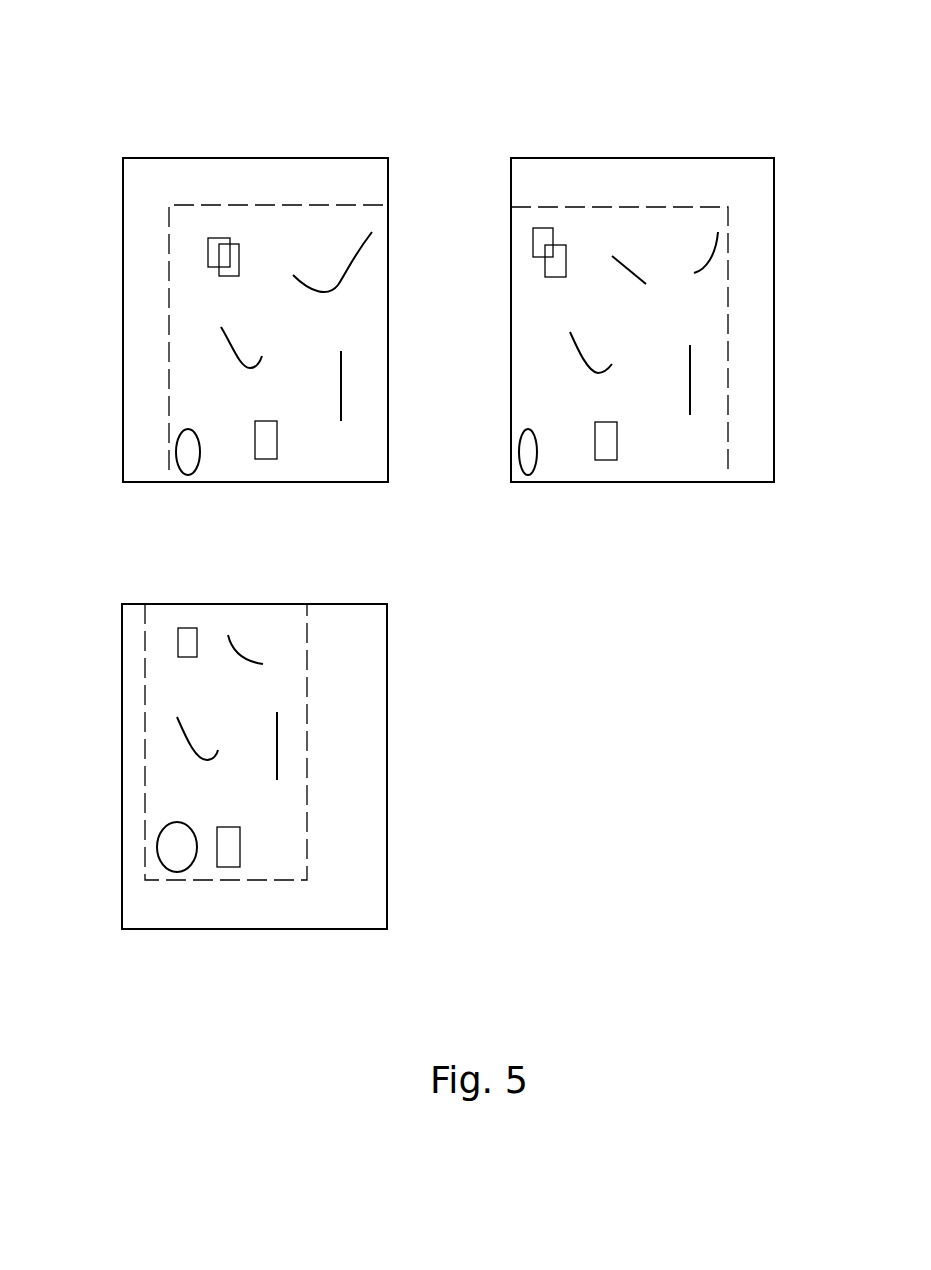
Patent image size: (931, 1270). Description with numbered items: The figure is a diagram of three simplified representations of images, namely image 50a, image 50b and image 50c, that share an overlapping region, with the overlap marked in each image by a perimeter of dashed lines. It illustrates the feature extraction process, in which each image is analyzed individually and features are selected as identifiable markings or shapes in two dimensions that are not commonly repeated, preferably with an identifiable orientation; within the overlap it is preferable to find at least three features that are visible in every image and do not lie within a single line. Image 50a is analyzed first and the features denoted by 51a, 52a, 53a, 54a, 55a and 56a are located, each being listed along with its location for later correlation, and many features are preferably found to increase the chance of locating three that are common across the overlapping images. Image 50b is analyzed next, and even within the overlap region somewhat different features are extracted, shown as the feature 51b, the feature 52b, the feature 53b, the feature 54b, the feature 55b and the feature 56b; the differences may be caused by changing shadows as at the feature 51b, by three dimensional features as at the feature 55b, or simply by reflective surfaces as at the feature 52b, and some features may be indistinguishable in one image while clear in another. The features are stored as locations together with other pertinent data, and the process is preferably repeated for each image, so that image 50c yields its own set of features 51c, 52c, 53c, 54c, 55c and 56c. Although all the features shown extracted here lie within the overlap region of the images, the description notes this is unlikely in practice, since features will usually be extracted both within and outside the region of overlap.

The image 50a is at (148, 170).
The feature 51a is at (208, 247).
The feature 52a is at (343, 252).
The feature 53a is at (341, 405).
The feature 54a is at (262, 433).
The feature 55a is at (185, 447).
The feature 56a is at (227, 348).
The image 50b is at (682, 168).
The feature 51b is at (541, 234).
The feature 52b is at (684, 268).
The feature 53b is at (692, 378).
The feature 54b is at (605, 449).
The feature 55b is at (535, 470).
The feature 56b is at (578, 368).
The image 50c is at (322, 915).
The feature 51c is at (183, 640).
The feature 52c is at (255, 643).
The feature 53c is at (280, 741).
The feature 54c is at (235, 840).
The feature 55c is at (170, 843).
The feature 56c is at (183, 745).